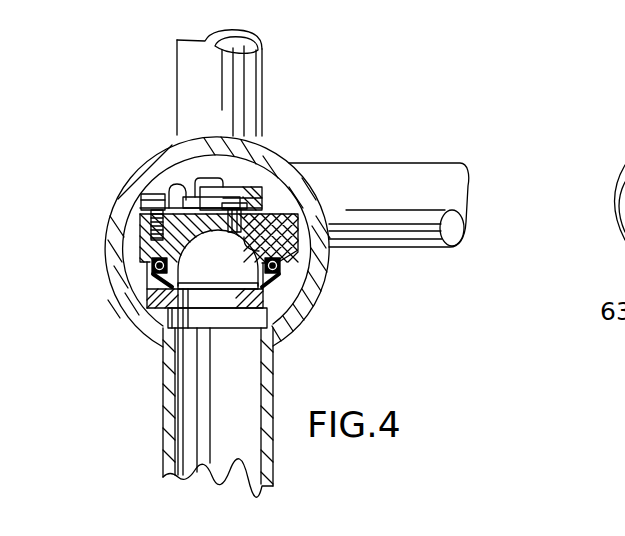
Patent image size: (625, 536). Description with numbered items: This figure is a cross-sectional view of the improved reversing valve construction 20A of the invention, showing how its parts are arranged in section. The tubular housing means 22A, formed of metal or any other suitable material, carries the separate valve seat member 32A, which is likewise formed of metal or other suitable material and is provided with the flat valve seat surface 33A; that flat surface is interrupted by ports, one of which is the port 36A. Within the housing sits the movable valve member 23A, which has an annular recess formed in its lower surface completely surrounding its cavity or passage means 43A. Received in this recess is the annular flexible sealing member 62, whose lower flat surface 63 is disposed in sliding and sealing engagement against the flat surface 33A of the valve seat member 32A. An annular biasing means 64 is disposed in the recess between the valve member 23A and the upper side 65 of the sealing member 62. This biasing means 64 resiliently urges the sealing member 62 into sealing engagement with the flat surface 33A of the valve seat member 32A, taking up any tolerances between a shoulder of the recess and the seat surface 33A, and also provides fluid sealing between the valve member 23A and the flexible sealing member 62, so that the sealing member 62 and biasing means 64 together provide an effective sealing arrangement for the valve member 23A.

The reversing valve construction 20A is at (357, 115).
The tubular housing means 22A is at (149, 160).
The movable valve member 23A is at (172, 252).
The valve seat member 32A is at (165, 292).
The flat valve seat surface 33A is at (157, 276).
The port 36A is at (152, 337).
The cavity or passage means 43A is at (300, 229).
The annular flexible sealing member 62 is at (256, 264).
The lower flat surface 63 is at (262, 307).
The annular biasing means 64 is at (245, 243).
The upper side 65 is at (183, 253).